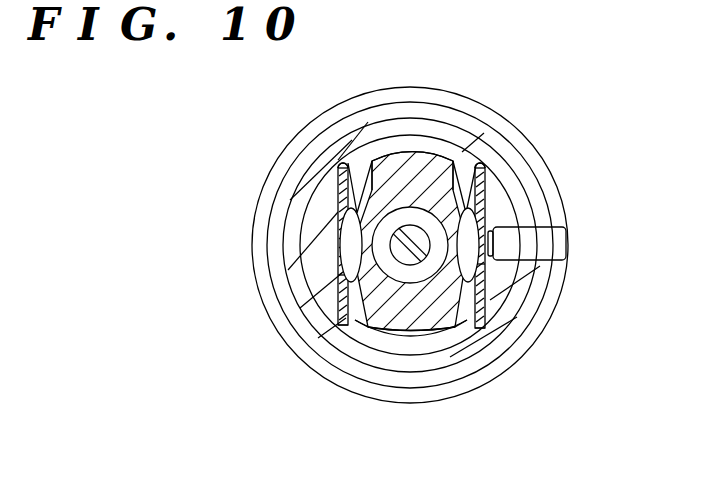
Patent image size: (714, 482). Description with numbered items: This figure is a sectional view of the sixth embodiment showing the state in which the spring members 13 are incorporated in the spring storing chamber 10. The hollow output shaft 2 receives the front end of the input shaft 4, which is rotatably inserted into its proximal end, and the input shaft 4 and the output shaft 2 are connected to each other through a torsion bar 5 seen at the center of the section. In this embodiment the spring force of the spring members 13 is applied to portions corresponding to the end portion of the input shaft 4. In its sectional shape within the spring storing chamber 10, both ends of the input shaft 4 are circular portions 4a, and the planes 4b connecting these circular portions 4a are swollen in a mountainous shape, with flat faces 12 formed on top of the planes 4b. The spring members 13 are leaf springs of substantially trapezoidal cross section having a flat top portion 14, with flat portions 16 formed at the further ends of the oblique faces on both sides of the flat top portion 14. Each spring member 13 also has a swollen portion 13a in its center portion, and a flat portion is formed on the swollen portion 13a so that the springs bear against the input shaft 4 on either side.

The output shaft 2 is at (443, 366).
The input shaft 4 is at (446, 156).
The circular portion 4a is at (441, 156).
The plane 4b is at (361, 338).
The torsion bar 5 is at (401, 230).
The spring storing chamber 10 is at (380, 343).
The flat face 12 is at (373, 160).
The spring member 13 is at (330, 184).
The swollen portion 13a is at (340, 275).
The flat top portion 14 is at (345, 243).
The flat portion 16 is at (340, 162).